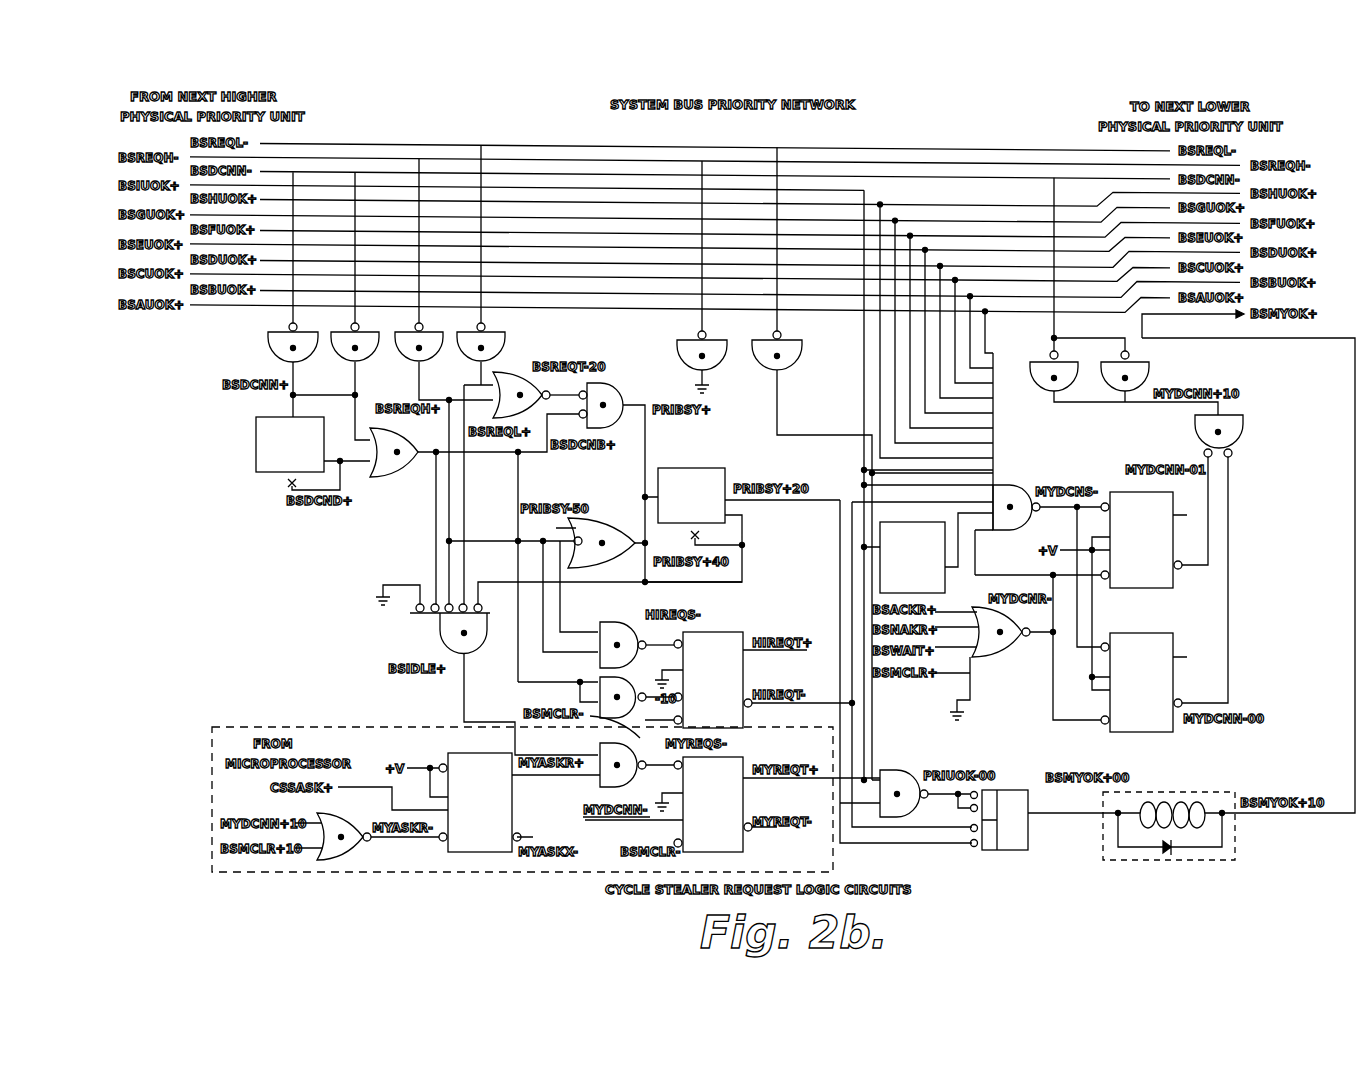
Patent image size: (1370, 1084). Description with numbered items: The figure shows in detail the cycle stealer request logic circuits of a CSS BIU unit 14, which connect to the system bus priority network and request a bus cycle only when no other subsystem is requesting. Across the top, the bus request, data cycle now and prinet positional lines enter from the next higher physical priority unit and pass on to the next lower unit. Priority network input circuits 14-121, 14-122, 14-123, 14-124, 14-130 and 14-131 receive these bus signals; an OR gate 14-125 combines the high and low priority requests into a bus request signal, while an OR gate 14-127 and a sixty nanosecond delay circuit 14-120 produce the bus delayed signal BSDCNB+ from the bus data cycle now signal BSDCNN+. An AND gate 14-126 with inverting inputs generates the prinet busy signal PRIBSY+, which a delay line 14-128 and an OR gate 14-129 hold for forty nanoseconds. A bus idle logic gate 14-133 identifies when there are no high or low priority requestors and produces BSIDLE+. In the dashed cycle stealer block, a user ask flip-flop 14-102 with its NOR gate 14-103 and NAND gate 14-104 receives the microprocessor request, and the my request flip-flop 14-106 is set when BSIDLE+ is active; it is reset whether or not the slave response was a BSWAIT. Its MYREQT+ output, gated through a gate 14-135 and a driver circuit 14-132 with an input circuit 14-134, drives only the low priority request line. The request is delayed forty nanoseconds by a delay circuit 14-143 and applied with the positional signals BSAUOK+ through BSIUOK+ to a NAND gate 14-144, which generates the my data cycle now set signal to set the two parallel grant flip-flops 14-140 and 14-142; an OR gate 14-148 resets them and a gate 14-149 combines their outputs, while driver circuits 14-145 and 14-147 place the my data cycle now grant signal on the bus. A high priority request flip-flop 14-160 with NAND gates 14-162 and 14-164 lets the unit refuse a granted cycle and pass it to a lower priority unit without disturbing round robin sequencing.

The CSS BIU unit 14 is at (260, 598).
The user ask flip-flop 14-102 is at (452, 758).
The NOR gate 14-103 is at (356, 850).
The NAND gate 14-104 is at (598, 790).
The my request (MYREQT) flip-flop 14-106 is at (735, 757).
The delay circuit 14-120 is at (264, 474).
The priority network input circuit 14-121 is at (268, 352).
The priority network input circuit 14-122 is at (352, 362).
The priority network input circuit 14-123 is at (426, 362).
The priority network input circuit 14-124 is at (505, 340).
The OR gate 14-125 is at (506, 372).
The AND gate 14-126 is at (610, 386).
The OR gate 14-127 is at (408, 476).
The delay line 14-128 is at (702, 468).
The OR gate 14-129 is at (612, 518).
The priority network input circuit 14-130 is at (793, 346).
The priority network input circuit 14-131 is at (684, 346).
The driver circuit 14-132 is at (1018, 790).
The bus idle logic gate 14-133 is at (440, 625).
The priority network input circuit 14-134 is at (1165, 792).
The gate 14-135 is at (886, 770).
The grant flip-flop 14-140 is at (1142, 588).
The grant flip-flop 14-142 is at (1140, 633).
The delay circuit 14-143 is at (935, 549).
The NAND gate 14-144 is at (1008, 485).
The driver circuit 14-145 is at (1147, 370).
The driver circuit 14-147 is at (1044, 355).
The OR gate 14-148 is at (986, 657).
The grant circuit gate 14-149 is at (1242, 426).
The high priority request flip-flop 14-160 is at (714, 632).
The NAND gate 14-162 is at (602, 622).
The NAND gate 14-164 is at (598, 680).